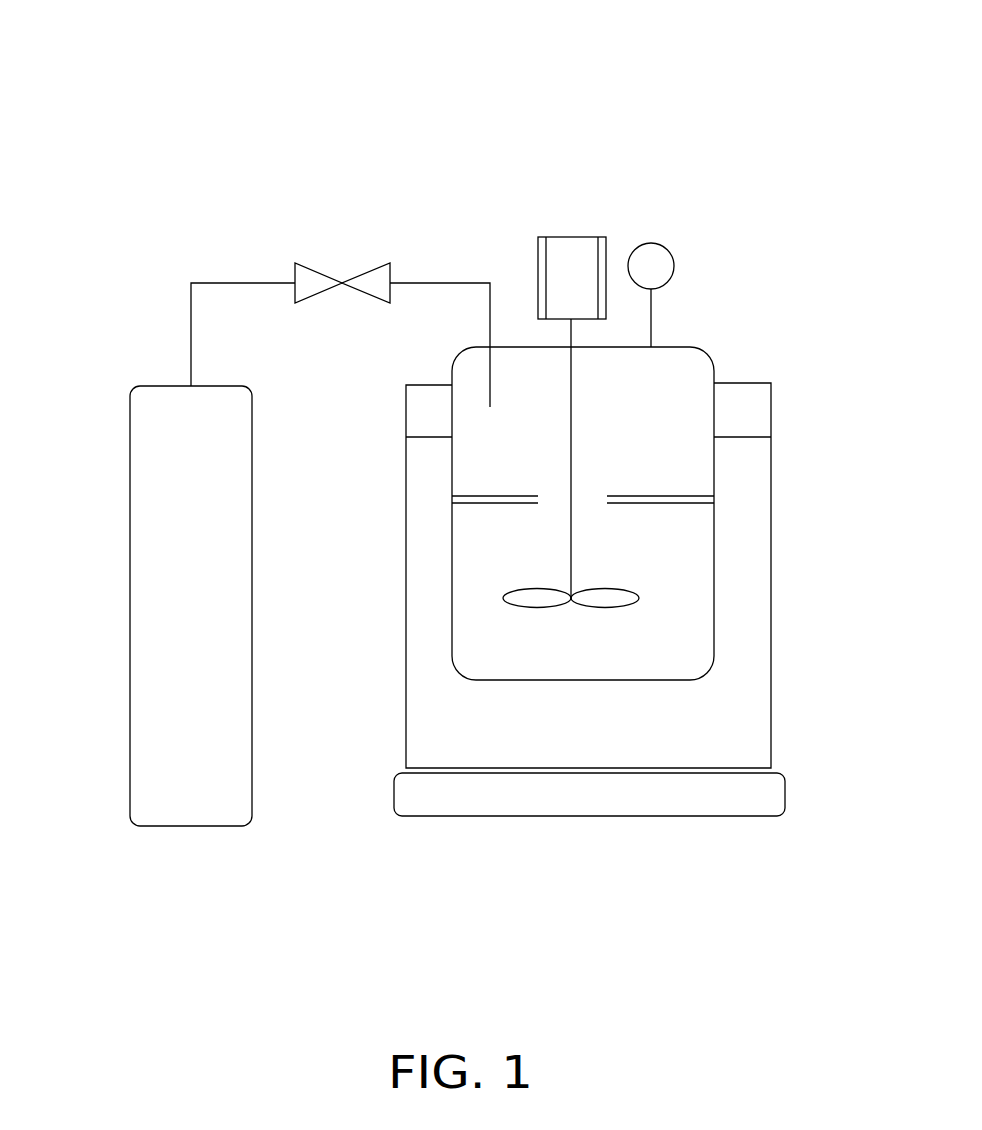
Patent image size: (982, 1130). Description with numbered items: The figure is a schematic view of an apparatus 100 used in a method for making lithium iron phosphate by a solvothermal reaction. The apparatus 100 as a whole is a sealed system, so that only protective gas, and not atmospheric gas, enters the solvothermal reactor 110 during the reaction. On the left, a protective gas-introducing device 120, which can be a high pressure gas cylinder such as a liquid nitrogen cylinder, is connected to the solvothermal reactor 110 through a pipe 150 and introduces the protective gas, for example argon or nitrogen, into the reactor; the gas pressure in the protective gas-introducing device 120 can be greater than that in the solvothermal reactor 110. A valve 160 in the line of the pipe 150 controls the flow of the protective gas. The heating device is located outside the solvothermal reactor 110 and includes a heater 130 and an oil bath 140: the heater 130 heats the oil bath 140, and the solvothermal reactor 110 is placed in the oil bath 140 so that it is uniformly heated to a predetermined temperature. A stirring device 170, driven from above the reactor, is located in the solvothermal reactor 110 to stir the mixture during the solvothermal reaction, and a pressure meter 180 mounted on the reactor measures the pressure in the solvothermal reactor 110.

The apparatus 100 is at (472, 48).
The solvothermal reactor 110 is at (708, 352).
The protective gas-introducing device 120 is at (162, 385).
The heater 130 is at (700, 802).
The oil bath 140 is at (747, 682).
The pipe 150 is at (243, 283).
The valve 160 is at (363, 268).
The stirring device 170 is at (572, 459).
The pressure meter 180 is at (653, 262).